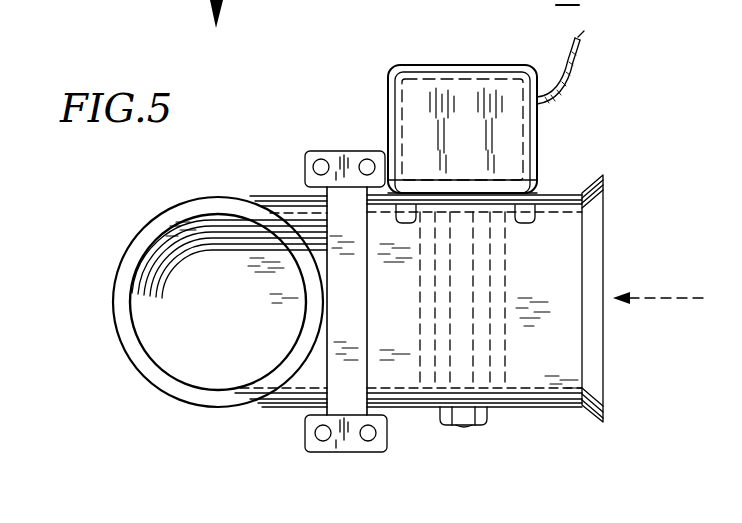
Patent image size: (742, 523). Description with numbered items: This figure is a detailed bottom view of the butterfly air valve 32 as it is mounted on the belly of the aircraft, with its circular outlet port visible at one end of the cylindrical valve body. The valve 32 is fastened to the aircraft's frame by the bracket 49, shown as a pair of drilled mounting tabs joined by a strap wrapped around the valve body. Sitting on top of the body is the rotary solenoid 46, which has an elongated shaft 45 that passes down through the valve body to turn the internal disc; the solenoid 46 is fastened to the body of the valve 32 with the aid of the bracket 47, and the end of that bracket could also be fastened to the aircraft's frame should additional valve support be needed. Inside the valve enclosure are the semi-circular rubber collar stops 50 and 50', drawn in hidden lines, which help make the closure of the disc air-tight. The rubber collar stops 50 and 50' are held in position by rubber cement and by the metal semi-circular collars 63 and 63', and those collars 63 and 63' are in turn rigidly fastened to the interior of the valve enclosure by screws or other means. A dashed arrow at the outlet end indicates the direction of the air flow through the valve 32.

The air valve 32 is at (272, 405).
The elongated shaft 45 is at (437, 362).
The rotary solenoid 46 is at (432, 66).
The bracket 47 is at (537, 187).
The bracket 49 is at (305, 161).
The rubber collar stop 50 is at (489, 339).
The rubber collar stop 50' is at (389, 162).
The metal semi-circular collar 63 is at (562, 398).
The metal semi-circular collar 63' is at (402, 420).